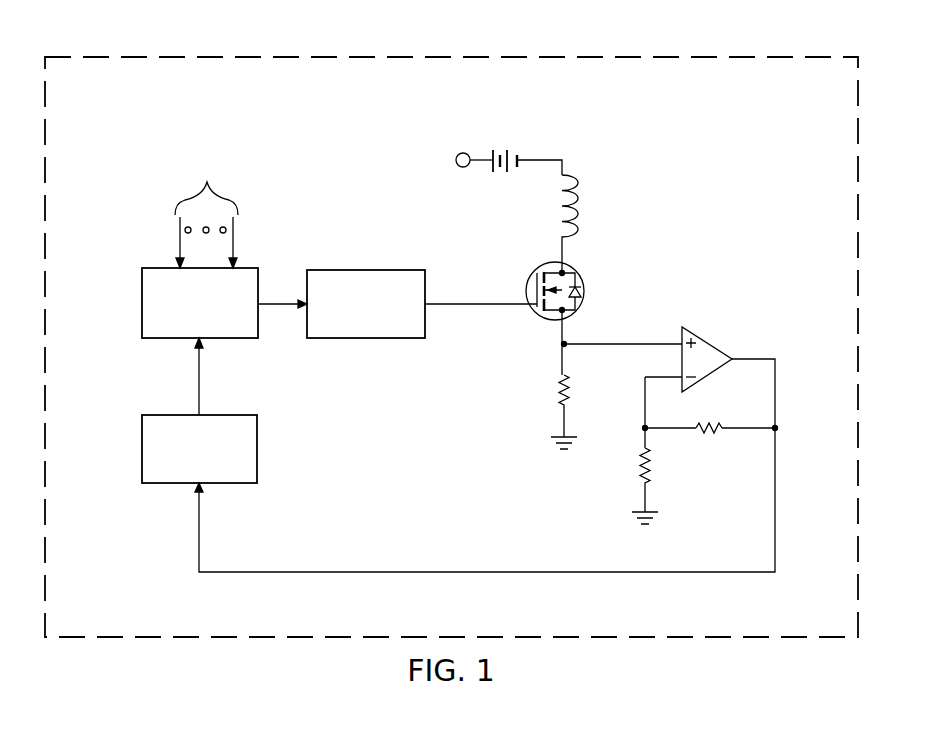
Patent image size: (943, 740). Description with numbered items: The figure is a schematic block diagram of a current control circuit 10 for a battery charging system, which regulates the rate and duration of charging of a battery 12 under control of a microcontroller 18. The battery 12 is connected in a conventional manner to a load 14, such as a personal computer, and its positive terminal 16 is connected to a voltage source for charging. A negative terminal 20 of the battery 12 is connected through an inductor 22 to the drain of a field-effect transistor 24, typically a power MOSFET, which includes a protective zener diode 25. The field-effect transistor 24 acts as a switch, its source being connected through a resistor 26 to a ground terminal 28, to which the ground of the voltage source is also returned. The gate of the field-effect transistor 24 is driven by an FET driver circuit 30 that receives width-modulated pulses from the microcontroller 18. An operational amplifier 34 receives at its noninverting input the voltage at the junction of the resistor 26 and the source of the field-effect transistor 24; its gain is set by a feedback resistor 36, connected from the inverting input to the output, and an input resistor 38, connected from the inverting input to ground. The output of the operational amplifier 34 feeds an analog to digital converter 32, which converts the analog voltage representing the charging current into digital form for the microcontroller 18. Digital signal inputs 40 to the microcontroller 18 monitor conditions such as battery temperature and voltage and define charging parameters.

The current control circuit 10 is at (354, 130).
The battery 12 is at (507, 177).
The load 14 is at (210, 52).
The positive terminal 16 is at (458, 155).
The microcontroller 18 is at (158, 267).
The negative terminal 20 is at (519, 160).
The inductor 22 is at (575, 192).
The field-effect transistor 24 is at (567, 265).
The protective zener diode 25 is at (583, 292).
The resistor 26 is at (558, 390).
The ground terminal 28 is at (660, 517).
The FET driver circuit 30 is at (365, 268).
The analog to digital converter 32 is at (258, 447).
The operational amplifier 34 is at (708, 337).
The feedback resistor 36 is at (710, 437).
The input resistor 38 is at (640, 470).
The digital signal inputs 40 is at (245, 243).